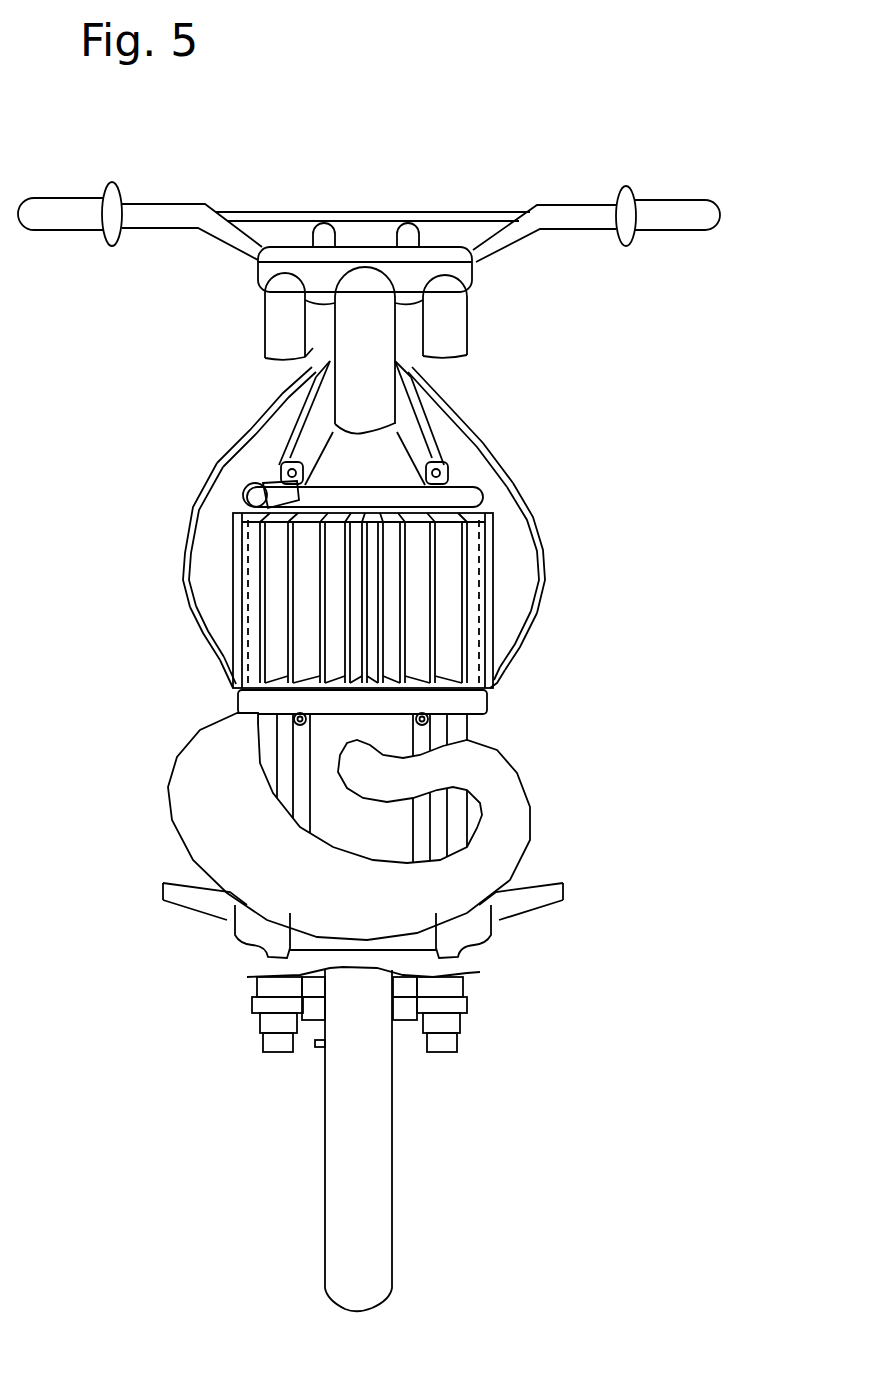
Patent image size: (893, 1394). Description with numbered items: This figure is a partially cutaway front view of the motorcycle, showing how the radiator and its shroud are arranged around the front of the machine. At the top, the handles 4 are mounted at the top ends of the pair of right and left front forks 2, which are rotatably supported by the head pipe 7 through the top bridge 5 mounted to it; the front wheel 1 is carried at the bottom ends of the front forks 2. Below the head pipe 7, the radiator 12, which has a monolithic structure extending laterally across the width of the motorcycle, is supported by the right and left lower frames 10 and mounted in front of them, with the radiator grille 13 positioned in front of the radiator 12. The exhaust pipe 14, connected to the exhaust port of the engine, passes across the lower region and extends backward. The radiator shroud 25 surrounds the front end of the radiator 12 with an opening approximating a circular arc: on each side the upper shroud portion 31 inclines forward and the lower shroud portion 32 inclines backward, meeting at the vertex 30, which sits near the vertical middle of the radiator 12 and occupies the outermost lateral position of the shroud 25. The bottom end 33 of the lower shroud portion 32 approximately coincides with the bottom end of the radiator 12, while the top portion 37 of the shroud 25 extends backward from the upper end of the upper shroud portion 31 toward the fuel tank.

The front wheel 1 is at (333, 1108).
The front forks 2 is at (267, 332).
The handles 4 is at (578, 213).
The top bridge 5 is at (470, 270).
The head pipe 7 is at (353, 315).
The lower frames 10 is at (297, 443).
The radiator 12 is at (230, 487).
The radiator grille 13 is at (502, 590).
The exhaust pipe 14 is at (170, 813).
The radiator shroud 25 is at (375, 551).
The vertex 30 is at (180, 570).
The upper shroud portion 31 is at (207, 500).
The lower shroud portion 32 is at (198, 623).
The bottom end 33 is at (230, 687).
The top portion 37 is at (307, 407).